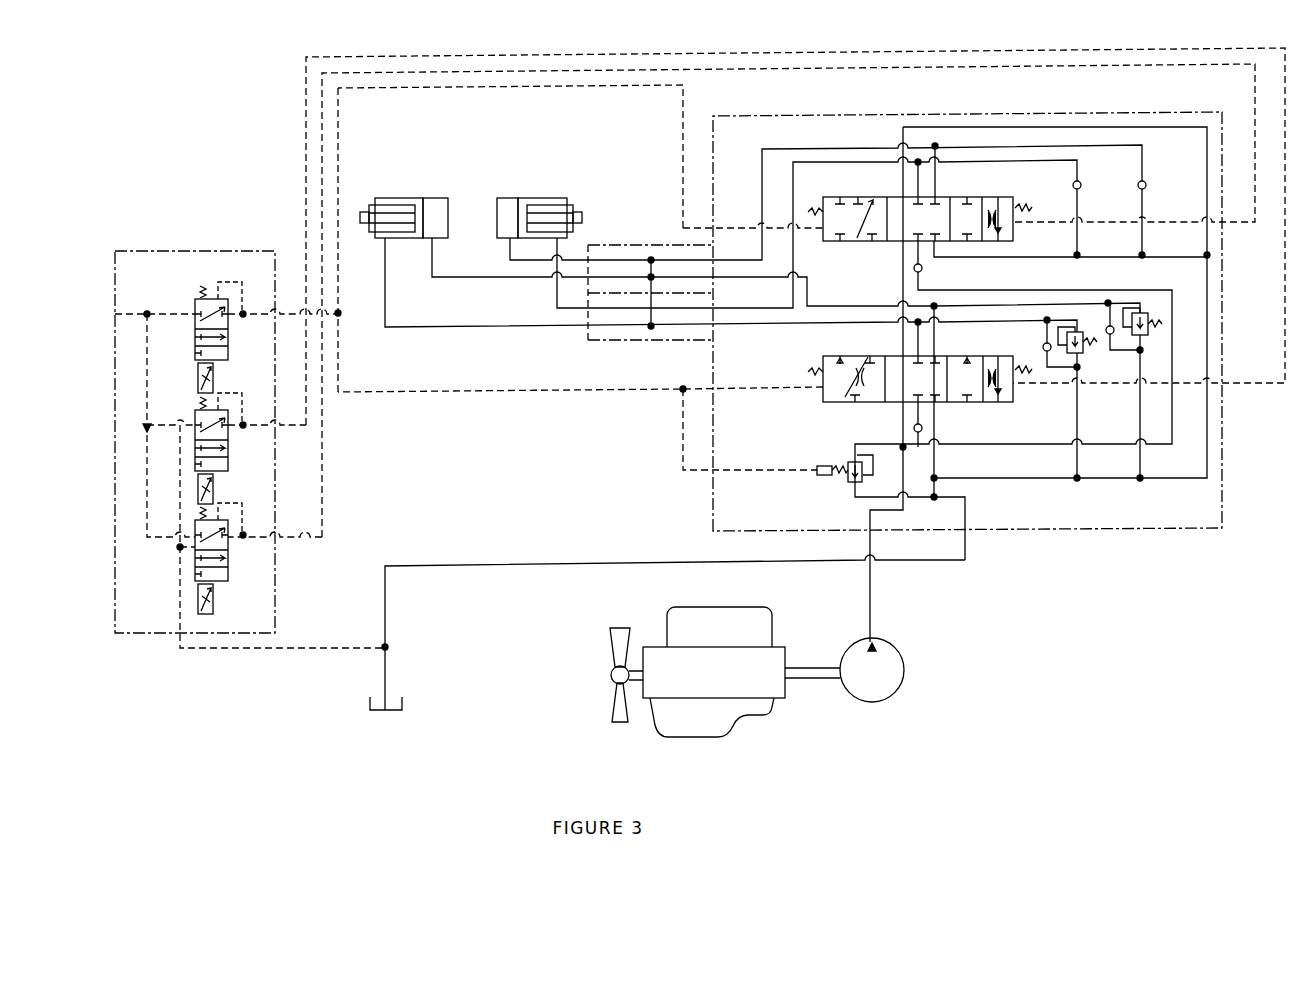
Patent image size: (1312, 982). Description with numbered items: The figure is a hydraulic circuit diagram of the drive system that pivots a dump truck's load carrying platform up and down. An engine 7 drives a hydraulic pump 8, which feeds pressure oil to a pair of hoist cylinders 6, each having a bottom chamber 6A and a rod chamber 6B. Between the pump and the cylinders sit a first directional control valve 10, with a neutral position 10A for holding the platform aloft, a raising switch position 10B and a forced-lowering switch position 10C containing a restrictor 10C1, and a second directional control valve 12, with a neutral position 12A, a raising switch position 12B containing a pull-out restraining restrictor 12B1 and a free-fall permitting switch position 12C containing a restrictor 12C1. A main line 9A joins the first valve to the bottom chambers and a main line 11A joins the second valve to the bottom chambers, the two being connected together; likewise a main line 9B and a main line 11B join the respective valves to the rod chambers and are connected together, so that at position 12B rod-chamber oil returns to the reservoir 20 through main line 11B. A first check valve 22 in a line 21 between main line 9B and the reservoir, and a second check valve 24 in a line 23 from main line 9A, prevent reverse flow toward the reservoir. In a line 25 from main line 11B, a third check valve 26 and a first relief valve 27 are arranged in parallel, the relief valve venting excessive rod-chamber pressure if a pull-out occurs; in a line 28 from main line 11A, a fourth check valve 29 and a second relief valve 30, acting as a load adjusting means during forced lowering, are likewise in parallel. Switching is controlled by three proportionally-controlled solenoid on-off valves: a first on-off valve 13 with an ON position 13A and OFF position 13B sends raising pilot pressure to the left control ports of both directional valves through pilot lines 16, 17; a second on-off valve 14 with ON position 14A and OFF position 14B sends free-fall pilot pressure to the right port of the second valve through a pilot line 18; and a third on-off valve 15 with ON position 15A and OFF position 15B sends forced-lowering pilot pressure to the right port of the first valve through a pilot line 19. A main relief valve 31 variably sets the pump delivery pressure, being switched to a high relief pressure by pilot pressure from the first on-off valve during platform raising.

The hoist cylinder 6 is at (470, 193).
The bottom chamber 6A is at (440, 203).
The rod chamber 6B is at (388, 198).
The engine 7 is at (765, 713).
The hydraulic pump 8 is at (900, 658).
The main line 9A is at (795, 145).
The main line 9B is at (838, 162).
The first directional control valve 10 is at (936, 211).
The neutral position 10A is at (893, 197).
The switch position 10B is at (837, 197).
The switch position 10C is at (1016, 211).
The restrictor 10C1 is at (1005, 222).
The main line 11A is at (843, 305).
The main line 11B is at (885, 320).
The second directional control valve 12 is at (917, 386).
The neutral position 12A is at (892, 356).
The switch position 12B is at (827, 386).
The restrictor 12B1 is at (857, 383).
The switch position 12C is at (1005, 386).
The restrictor 12C1 is at (1002, 383).
The first on-off valve 13 is at (195, 303).
The ON position 13A is at (225, 353).
The OFF position 13B is at (228, 318).
The second on-off valve 14 is at (197, 420).
The ON position 14A is at (225, 465).
The OFF position 14B is at (228, 430).
The third on-off valve 15 is at (197, 527).
The ON position 15A is at (225, 575).
The OFF position 15B is at (228, 540).
The pilot line 16 is at (588, 90).
The pilot line 17 is at (583, 392).
The pilot line 18 is at (838, 50).
The pilot line 19 is at (878, 70).
The reservoir 20 is at (405, 697).
The line 21 is at (1082, 172).
The first check valve 22 is at (1080, 188).
The line 23 is at (1145, 157).
The second check valve 24 is at (1147, 188).
The line 25 is at (1035, 287).
The third check valve 26 is at (1044, 352).
The first relief valve 27 is at (1068, 353).
The line 28 is at (1078, 287).
The fourth check valve 29 is at (1108, 335).
The second relief valve 30 is at (1133, 335).
The main relief valve 31 is at (845, 483).